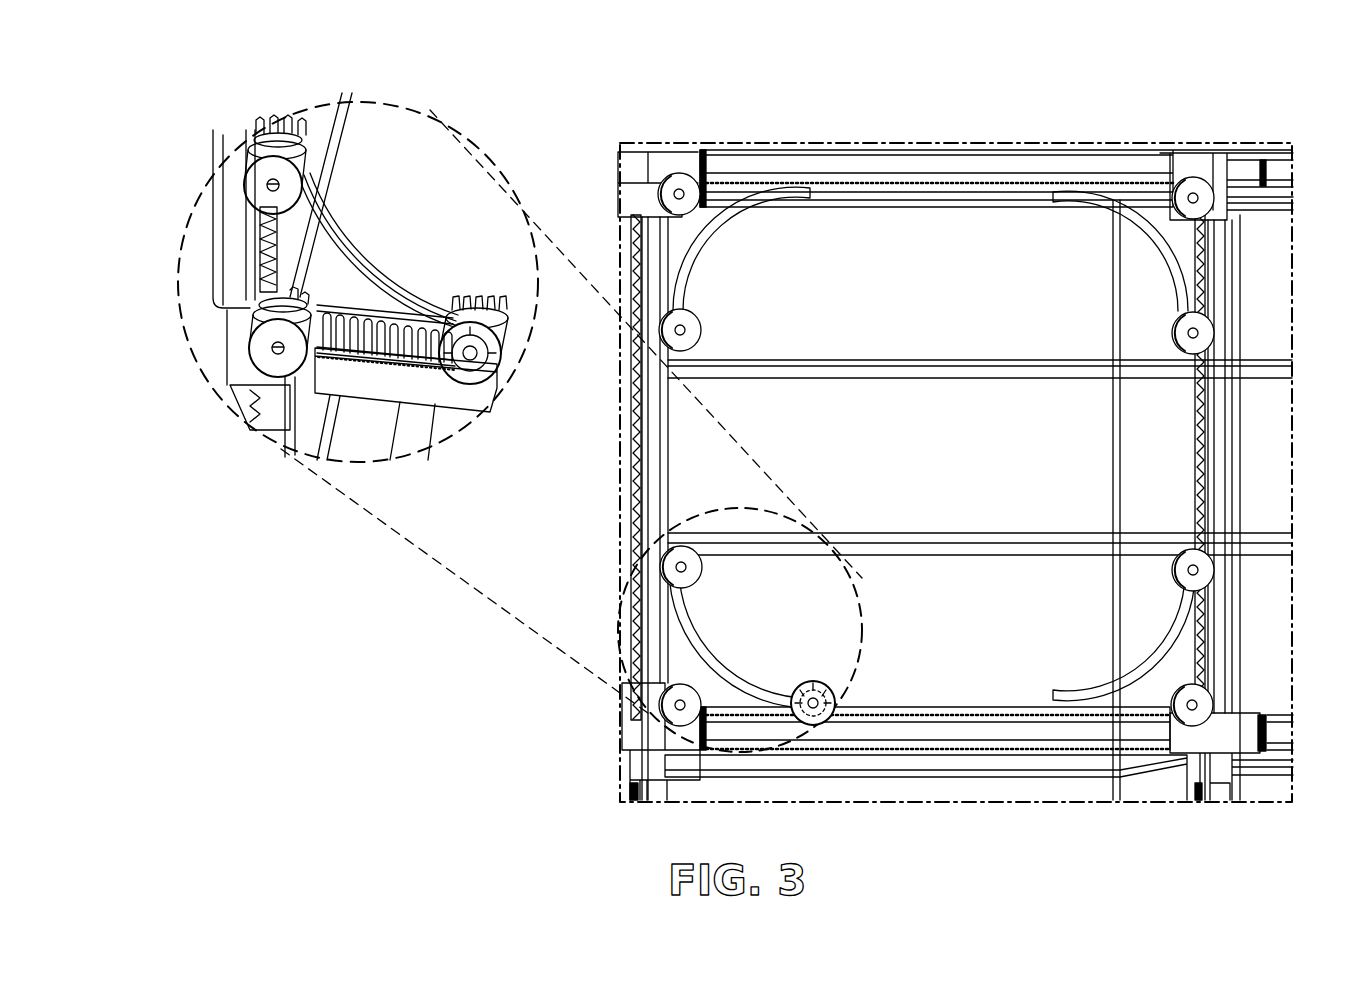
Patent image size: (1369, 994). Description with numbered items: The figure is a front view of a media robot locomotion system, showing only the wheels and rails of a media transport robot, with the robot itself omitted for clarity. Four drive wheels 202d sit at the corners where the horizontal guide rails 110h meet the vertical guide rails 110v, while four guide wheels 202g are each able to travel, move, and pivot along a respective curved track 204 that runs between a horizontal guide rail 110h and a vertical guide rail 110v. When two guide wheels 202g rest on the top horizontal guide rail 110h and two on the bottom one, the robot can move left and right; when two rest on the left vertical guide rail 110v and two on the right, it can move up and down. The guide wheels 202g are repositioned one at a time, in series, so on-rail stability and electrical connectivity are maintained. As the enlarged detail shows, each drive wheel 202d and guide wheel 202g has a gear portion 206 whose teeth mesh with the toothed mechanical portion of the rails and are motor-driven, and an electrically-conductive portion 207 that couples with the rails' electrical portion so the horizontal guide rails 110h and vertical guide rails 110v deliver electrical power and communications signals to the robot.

The horizontal guide rail 110h is at (812, 185).
The vertical guide rail 110v is at (652, 500).
The drive wheel 202d is at (672, 178).
The guide wheel 202g is at (690, 335).
The track 204 is at (706, 245).
The gear portion 206 is at (287, 120).
The electrically-conductive portion 207 is at (300, 150).